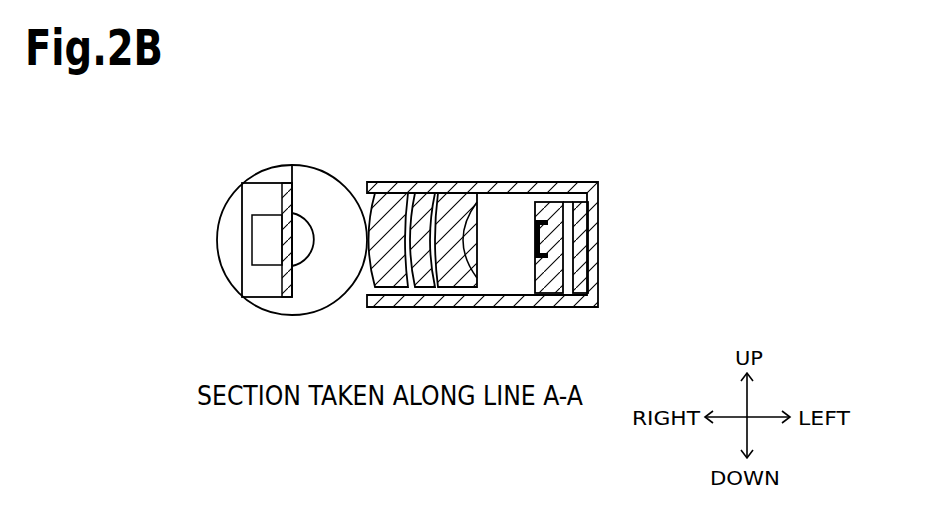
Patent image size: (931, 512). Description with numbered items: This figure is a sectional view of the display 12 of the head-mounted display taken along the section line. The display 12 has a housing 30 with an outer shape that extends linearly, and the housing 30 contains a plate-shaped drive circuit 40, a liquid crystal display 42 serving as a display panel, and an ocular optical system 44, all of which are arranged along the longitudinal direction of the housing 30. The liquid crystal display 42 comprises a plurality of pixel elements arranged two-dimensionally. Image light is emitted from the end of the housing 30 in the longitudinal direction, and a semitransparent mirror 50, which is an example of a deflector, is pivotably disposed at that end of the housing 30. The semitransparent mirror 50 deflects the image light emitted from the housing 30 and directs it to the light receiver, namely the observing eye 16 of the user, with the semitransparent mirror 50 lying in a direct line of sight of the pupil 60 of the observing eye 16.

The display 12 is at (640, 197).
The observing eye 16 is at (318, 182).
The housing 30 is at (535, 188).
The drive circuit 40 is at (579, 275).
The liquid crystal display 42 is at (548, 273).
The ocular optical system 44 is at (486, 279).
The semitransparent mirror 50 is at (258, 283).
The pupil 60 is at (307, 250).